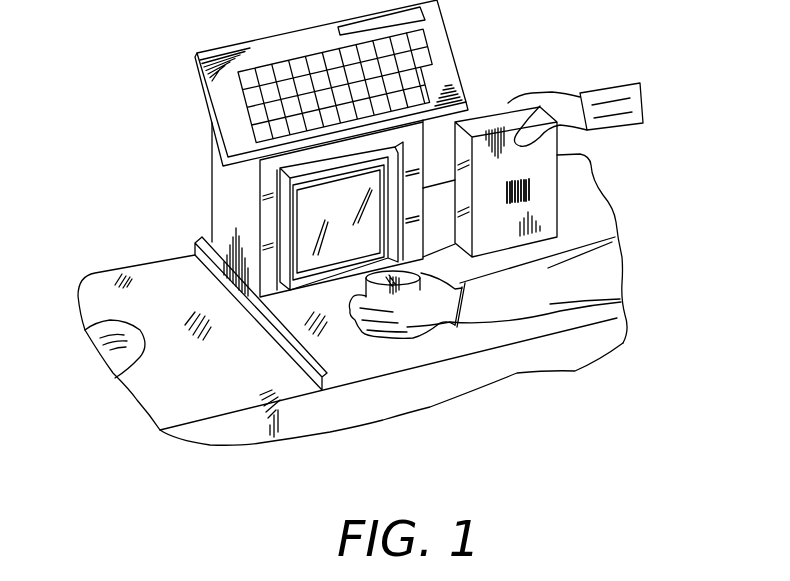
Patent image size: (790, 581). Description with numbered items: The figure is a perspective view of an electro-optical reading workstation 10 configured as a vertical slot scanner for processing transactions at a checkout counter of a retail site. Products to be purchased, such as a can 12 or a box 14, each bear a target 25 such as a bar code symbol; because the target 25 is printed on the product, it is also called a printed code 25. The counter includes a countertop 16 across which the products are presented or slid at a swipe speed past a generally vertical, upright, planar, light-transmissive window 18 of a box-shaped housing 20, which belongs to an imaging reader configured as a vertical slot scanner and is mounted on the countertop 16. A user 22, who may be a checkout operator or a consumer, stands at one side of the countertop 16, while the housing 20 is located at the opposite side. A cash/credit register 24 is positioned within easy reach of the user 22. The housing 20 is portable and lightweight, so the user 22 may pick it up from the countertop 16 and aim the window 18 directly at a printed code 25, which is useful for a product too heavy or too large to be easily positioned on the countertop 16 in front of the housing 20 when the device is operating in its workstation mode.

The electro-optical reading workstation 10 is at (509, 67).
The can 12 is at (402, 340).
The box 14 is at (545, 150).
The countertop 16 is at (325, 375).
The light-transmissive window 18 is at (312, 227).
The box-shaped housing 20 is at (310, 178).
The user 22 is at (613, 267).
The cash/credit register 24 is at (296, 36).
The target 25 is at (530, 188).